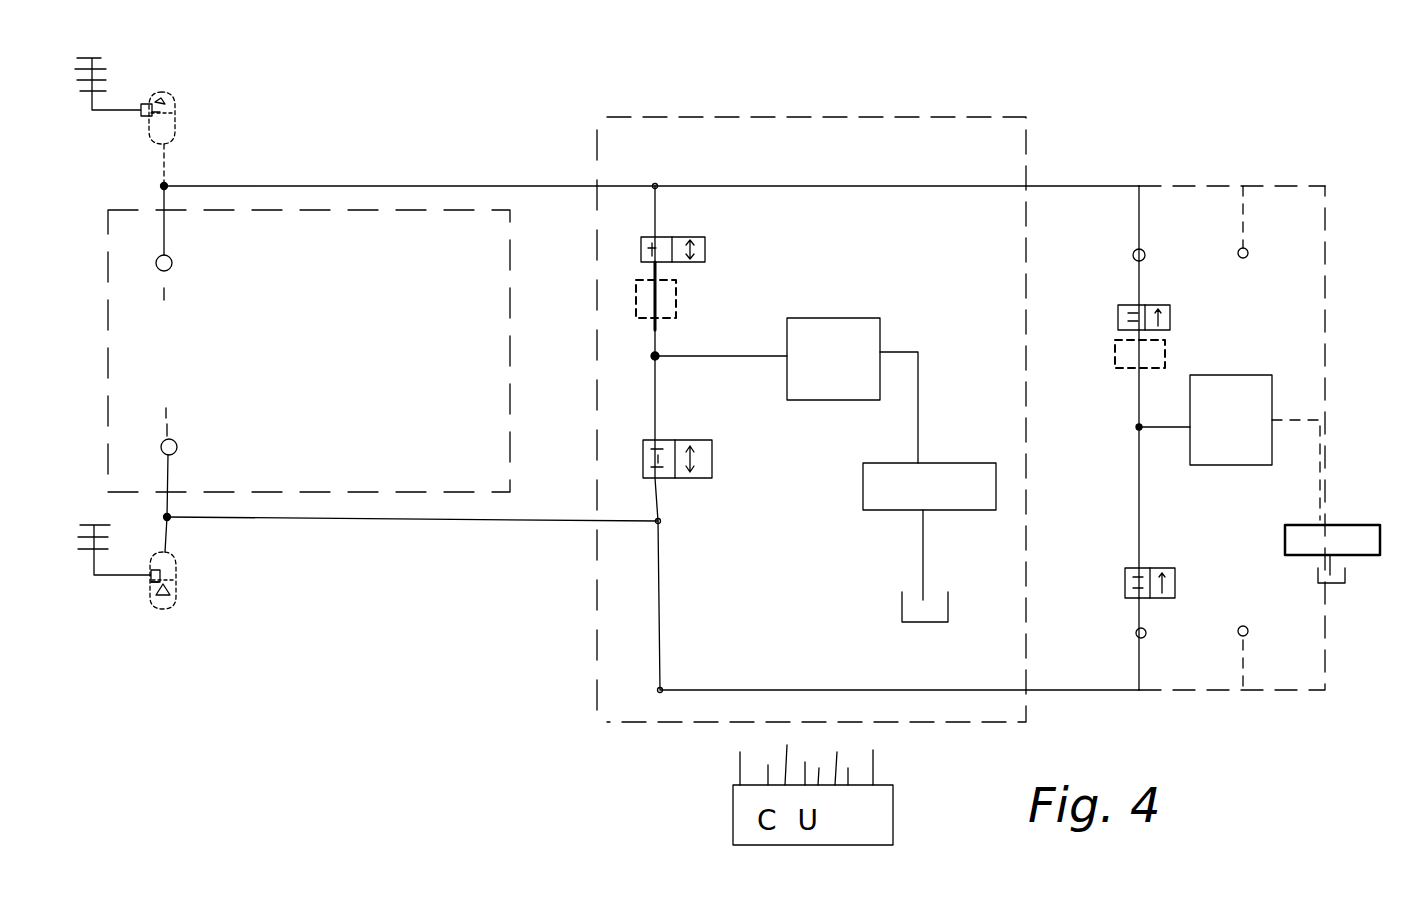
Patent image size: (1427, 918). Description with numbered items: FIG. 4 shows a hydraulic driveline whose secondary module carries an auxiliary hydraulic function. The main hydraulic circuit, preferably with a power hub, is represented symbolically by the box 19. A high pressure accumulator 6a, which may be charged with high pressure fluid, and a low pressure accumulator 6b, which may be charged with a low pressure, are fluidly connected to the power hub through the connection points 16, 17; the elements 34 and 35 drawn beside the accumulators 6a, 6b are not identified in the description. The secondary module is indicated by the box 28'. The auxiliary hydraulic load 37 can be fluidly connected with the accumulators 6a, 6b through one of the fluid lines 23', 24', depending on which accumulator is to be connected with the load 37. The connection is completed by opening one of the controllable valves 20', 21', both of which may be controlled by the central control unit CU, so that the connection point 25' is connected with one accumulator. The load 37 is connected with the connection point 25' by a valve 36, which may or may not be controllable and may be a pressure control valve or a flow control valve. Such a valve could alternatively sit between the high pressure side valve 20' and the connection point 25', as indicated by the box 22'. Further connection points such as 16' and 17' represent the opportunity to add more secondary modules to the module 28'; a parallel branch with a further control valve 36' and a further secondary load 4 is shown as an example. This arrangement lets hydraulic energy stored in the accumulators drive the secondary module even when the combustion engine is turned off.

The high pressure sensor 34 is at (141, 102).
The high pressure accumulator 6a is at (177, 138).
The connection point 16 is at (192, 311).
The connection point 17 is at (202, 478).
The main hydraulic circuit box 19 is at (370, 203).
The fluid line 23' is at (743, 156).
The fluid line 24' is at (412, 560).
The low pressure sensor 35 is at (150, 596).
The low pressure accumulator 6b is at (172, 604).
The secondary module 28' is at (811, 391).
The controllable valve 20' is at (703, 248).
The control valve box 22' is at (724, 296).
The connection point 25' is at (719, 340).
The valve 36 is at (860, 384).
The auxiliary hydraulic load 37 is at (955, 512).
The controllable valve 21' is at (710, 472).
The further connection point 16' is at (1106, 240).
The pressure or flow control valve 36' is at (1267, 436).
The clutch 4 is at (1383, 535).
The further connection point 17' is at (1100, 646).